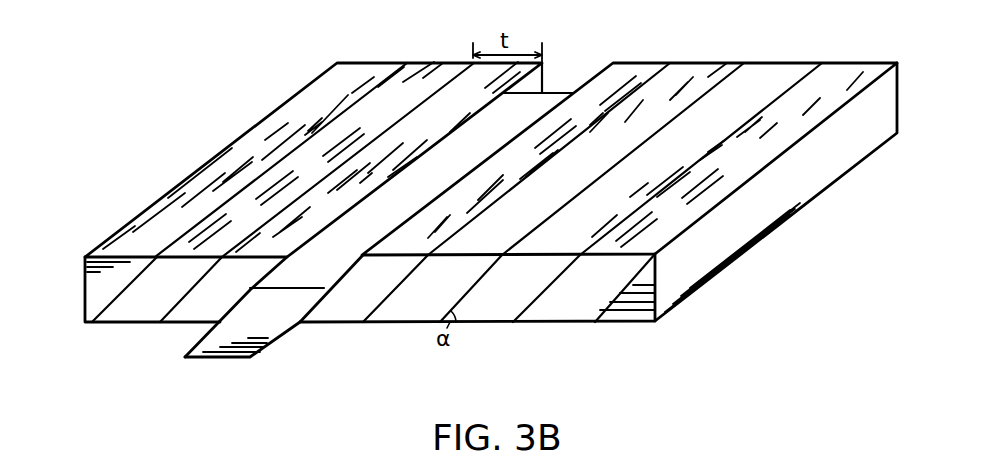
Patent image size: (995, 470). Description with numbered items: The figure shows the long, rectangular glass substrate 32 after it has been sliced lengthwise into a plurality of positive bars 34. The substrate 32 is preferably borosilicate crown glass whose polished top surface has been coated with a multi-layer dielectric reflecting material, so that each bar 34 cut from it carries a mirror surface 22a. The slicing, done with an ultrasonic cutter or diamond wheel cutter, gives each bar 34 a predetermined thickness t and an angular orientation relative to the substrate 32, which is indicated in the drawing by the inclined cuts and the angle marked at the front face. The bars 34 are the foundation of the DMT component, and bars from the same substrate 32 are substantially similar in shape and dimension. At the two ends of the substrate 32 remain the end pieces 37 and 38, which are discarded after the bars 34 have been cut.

The substrate 32 is at (212, 143).
The mirror surface 22a is at (838, 80).
The positive bars 34 is at (763, 62).
The end piece 37 is at (85, 288).
The end piece 38 is at (657, 287).